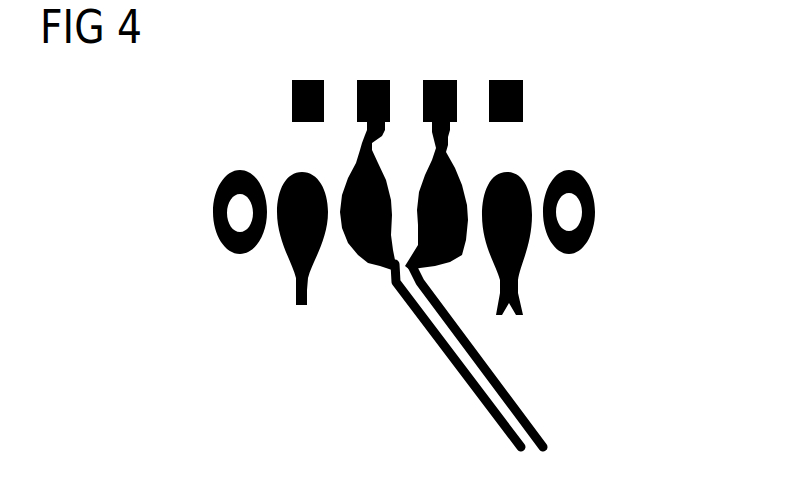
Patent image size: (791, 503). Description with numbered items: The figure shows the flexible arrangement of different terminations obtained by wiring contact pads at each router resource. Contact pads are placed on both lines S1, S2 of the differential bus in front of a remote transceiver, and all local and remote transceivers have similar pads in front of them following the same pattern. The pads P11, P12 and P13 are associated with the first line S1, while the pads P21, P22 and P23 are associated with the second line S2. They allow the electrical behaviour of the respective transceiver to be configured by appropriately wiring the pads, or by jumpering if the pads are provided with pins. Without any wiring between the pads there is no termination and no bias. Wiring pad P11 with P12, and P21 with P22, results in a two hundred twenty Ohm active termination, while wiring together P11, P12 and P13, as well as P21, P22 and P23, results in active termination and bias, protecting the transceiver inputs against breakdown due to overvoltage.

The contact pad P11 is at (367, 260).
The contact pad P12 is at (290, 262).
The contact pad P13 is at (214, 222).
The contact pad P21 is at (450, 260).
The contact pad P22 is at (515, 268).
The contact pad P23 is at (596, 218).
The line of the differential bus S1 is at (450, 370).
The line of the differential bus S2 is at (450, 370).